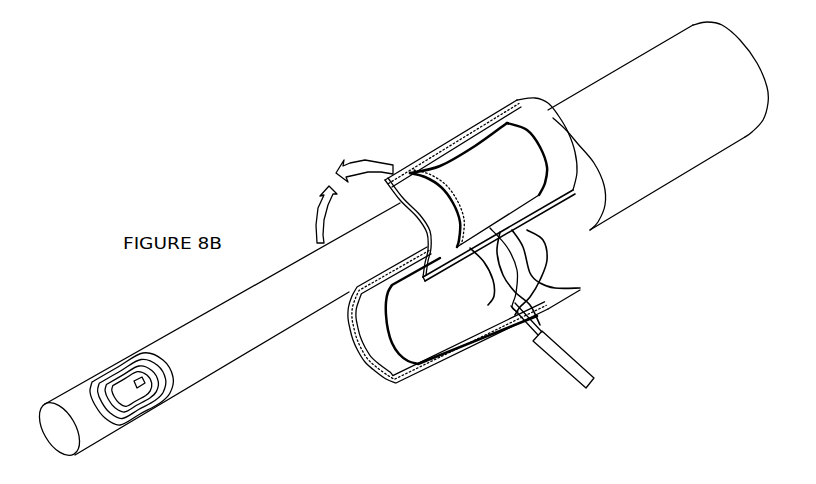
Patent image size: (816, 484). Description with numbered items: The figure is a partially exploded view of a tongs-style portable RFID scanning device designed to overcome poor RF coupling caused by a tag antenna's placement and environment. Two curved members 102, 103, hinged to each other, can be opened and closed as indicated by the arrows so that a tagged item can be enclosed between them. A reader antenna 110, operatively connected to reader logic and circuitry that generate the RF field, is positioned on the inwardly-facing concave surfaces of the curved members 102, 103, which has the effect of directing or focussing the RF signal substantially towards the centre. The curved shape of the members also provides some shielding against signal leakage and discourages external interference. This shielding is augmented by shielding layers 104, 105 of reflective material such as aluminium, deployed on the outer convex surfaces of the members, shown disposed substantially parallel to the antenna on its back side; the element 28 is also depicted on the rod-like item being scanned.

The sensor sleeve on rod 28 is at (100, 373).
The curved member 102 is at (519, 98).
The curved member 103 is at (402, 350).
The shielding layer 104 is at (658, 140).
The shielding layer 105 is at (636, 153).
The reader antenna 110 is at (399, 94).